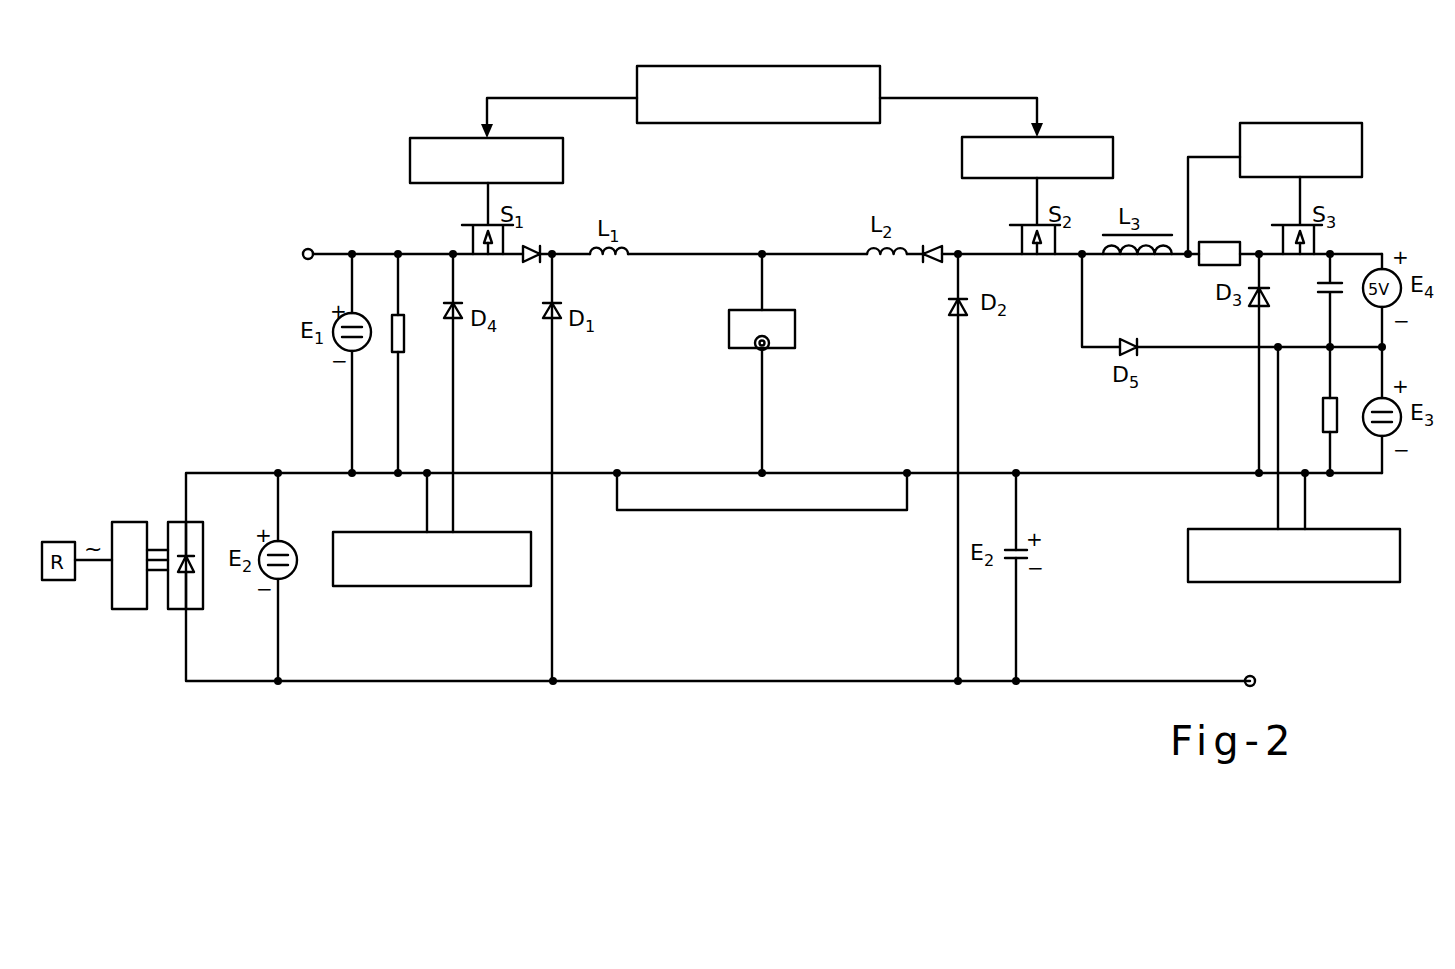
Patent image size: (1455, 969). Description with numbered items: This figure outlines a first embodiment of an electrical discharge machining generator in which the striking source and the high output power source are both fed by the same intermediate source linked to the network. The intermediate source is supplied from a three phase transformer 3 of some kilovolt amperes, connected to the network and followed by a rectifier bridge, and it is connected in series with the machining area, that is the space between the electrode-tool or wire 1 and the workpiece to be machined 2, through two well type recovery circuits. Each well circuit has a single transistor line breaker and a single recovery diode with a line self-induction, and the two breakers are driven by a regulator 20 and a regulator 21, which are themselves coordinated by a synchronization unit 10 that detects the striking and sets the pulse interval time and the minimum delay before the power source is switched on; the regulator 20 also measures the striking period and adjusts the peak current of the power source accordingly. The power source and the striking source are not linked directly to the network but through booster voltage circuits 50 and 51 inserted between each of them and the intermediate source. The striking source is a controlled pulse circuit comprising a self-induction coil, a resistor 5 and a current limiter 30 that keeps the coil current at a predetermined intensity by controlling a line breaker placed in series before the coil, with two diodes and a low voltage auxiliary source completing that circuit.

The electrode-tool or wire 1 is at (756, 346).
The workpiece to be machined 2 is at (729, 322).
The three phase transformer 3 is at (132, 609).
The resistor 5 is at (1220, 242).
The synchronization unit 10 is at (793, 66).
The regulator 20 is at (446, 138).
The regulator 21 is at (1078, 137).
The current limiter 30 is at (1362, 154).
The booster voltage circuit 50 is at (418, 586).
The booster voltage circuit 51 is at (1305, 582).